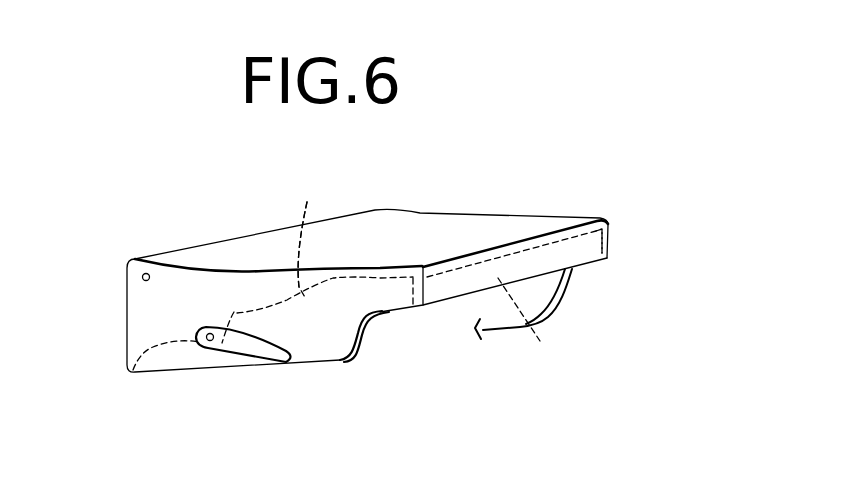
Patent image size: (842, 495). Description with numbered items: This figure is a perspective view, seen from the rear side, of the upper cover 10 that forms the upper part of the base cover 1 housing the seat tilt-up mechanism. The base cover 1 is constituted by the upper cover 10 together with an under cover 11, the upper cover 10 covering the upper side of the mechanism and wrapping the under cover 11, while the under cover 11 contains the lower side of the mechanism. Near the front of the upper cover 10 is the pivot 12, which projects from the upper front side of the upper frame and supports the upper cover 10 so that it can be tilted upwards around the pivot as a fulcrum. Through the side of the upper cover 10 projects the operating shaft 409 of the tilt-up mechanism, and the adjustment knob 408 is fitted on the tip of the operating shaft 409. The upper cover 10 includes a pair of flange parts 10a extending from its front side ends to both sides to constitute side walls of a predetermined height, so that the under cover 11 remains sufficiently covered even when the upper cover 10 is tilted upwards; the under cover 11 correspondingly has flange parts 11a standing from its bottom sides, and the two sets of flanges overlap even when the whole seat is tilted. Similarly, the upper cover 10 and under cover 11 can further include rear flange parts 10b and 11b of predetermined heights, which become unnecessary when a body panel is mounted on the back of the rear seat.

The base cover 1 is at (426, 223).
The upper cover 10 is at (247, 222).
The flange parts 10a is at (165, 360).
The rear flange parts 10b is at (558, 252).
The under cover 11 is at (321, 342).
The flange parts 11a is at (313, 232).
The rear flange parts 11b is at (534, 320).
The pivot 12 is at (142, 279).
The adjustment knob 408 is at (248, 345).
The operating shaft 409 is at (203, 350).